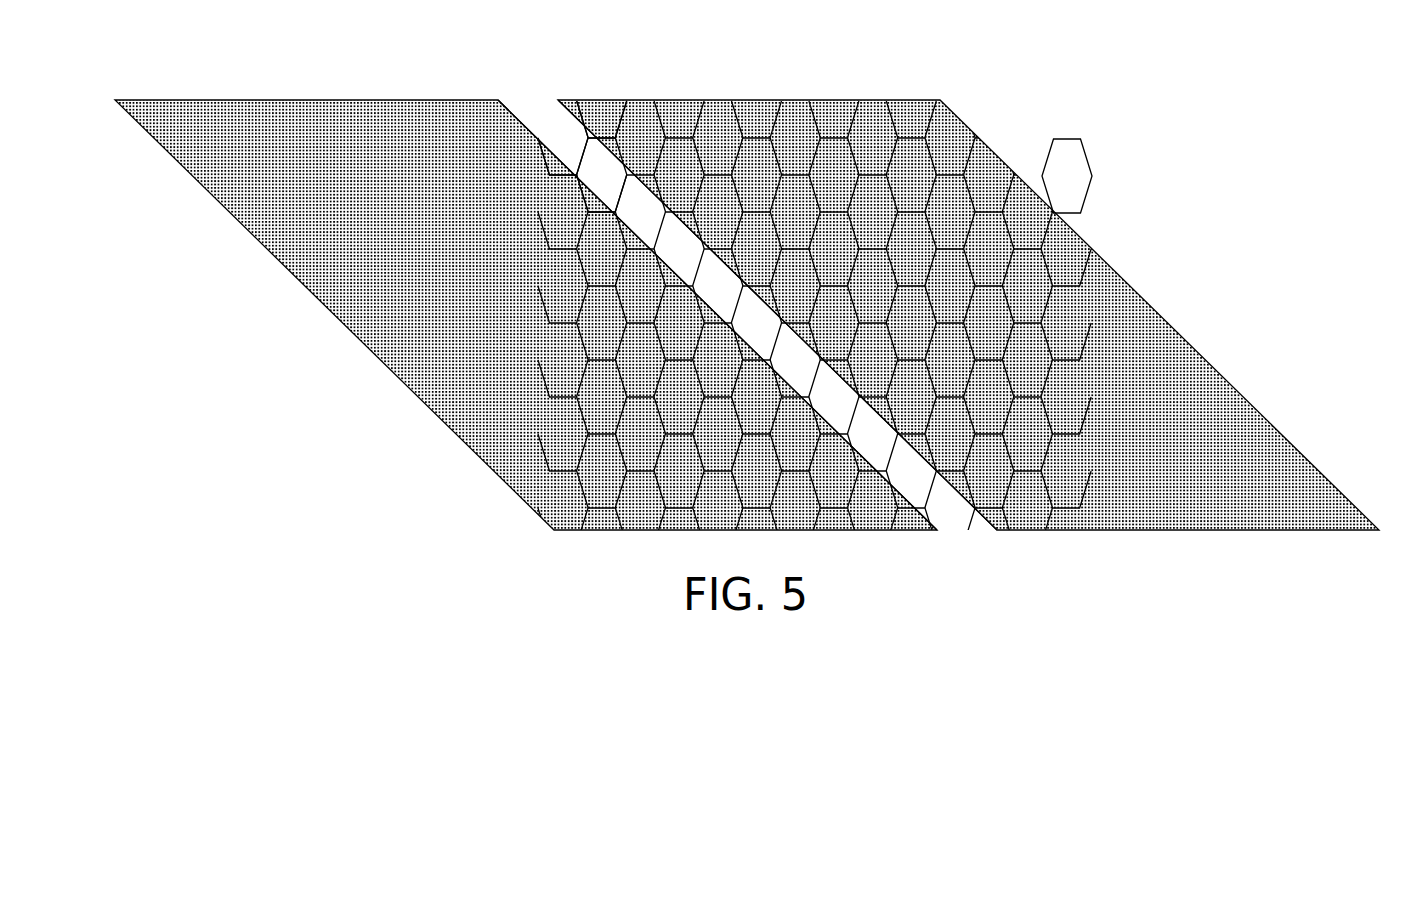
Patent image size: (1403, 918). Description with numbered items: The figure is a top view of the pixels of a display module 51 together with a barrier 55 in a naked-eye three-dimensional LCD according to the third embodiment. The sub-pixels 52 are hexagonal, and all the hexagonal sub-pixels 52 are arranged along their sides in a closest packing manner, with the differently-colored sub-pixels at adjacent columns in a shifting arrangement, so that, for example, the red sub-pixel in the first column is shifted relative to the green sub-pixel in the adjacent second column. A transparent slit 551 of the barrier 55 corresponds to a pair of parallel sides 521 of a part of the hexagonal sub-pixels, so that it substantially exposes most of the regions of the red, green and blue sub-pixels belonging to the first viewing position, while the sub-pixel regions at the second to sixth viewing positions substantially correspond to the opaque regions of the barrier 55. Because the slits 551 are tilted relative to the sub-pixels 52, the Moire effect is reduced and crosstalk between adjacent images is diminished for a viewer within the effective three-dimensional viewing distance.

The display module 51 is at (1118, 168).
The hexagonal sub-pixel 52 is at (1065, 148).
The pair of parallel sides 521 is at (621, 171).
The transparent slit 551 is at (543, 88).
The barrier 55 is at (1235, 411).